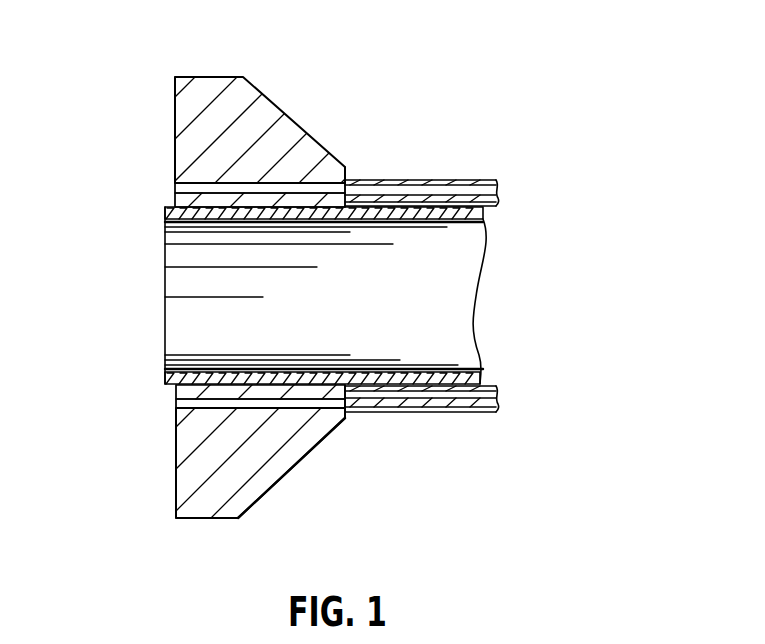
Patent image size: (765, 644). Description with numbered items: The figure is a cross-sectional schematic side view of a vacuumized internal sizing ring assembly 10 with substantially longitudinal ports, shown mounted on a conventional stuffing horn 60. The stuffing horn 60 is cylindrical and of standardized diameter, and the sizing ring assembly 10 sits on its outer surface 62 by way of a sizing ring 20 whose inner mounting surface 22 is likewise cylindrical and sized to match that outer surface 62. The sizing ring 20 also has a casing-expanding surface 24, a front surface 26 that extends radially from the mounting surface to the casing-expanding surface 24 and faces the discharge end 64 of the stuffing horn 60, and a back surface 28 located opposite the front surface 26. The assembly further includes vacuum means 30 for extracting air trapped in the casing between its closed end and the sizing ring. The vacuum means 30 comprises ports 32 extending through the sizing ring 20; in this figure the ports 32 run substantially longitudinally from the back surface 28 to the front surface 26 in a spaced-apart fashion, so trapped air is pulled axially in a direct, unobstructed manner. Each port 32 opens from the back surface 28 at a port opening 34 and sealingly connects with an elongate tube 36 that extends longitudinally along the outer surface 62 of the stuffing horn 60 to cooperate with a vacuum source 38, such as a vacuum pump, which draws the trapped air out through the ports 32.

The sizing ring assembly 10 is at (455, 77).
The sizing ring 20 is at (140, 100).
The inner mounting surface 22 is at (193, 210).
The casing-expanding surface 24 is at (197, 77).
The front surface 26 is at (176, 463).
The back surface 28 is at (347, 173).
The vacuum means 30 is at (420, 432).
The port 32 is at (192, 398).
The port opening 34 is at (345, 418).
The elongate tube 36 is at (482, 417).
The vacuum source 38 is at (512, 195).
The stuffing horn 60 is at (485, 355).
The outer surface 62 is at (483, 210).
The discharge end 64 is at (163, 310).